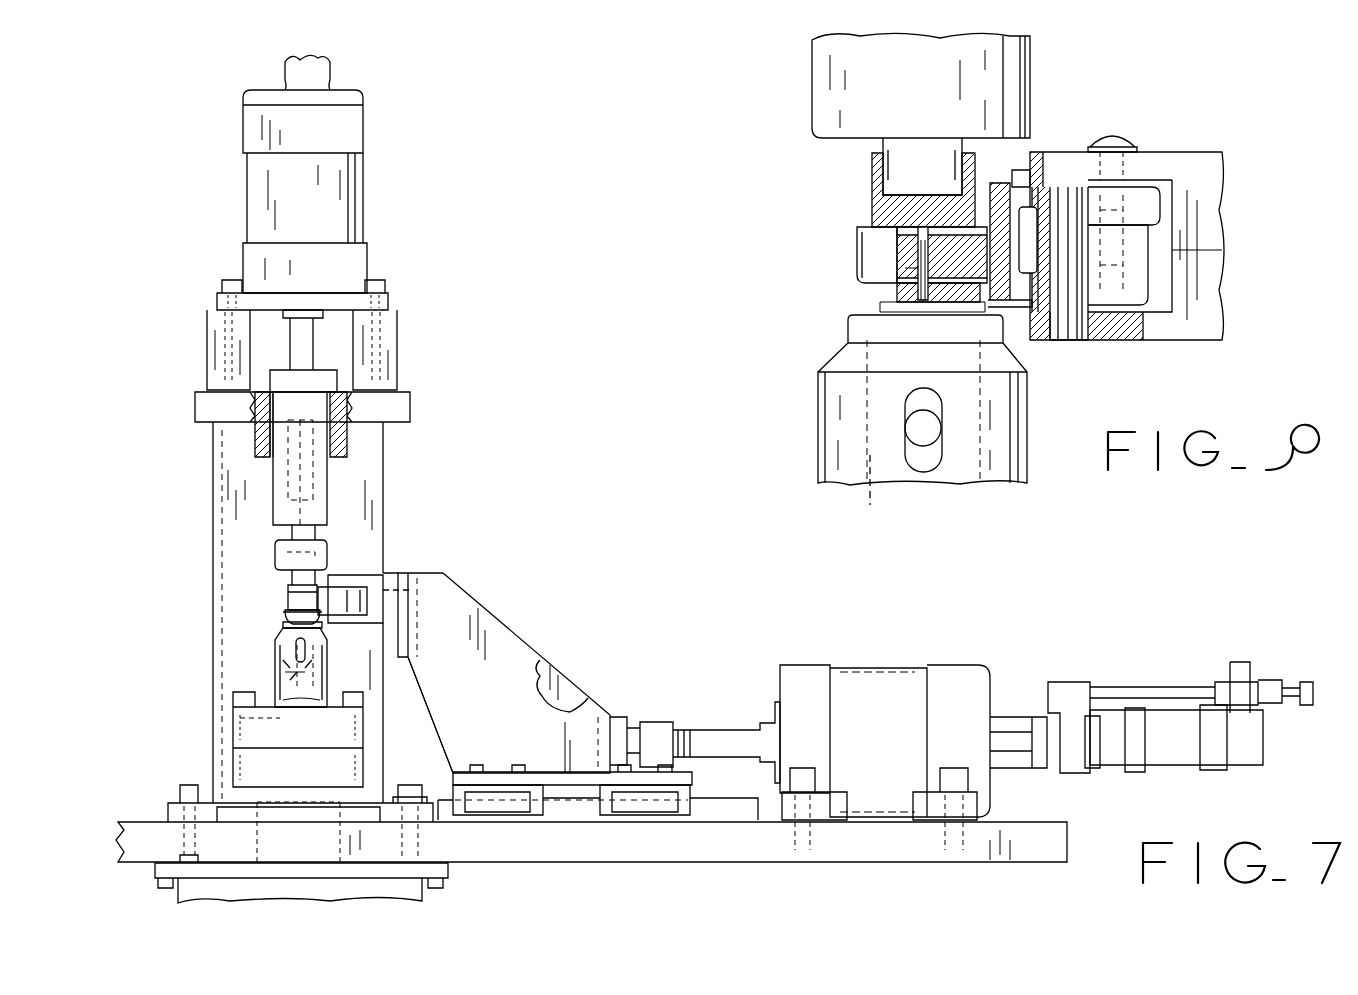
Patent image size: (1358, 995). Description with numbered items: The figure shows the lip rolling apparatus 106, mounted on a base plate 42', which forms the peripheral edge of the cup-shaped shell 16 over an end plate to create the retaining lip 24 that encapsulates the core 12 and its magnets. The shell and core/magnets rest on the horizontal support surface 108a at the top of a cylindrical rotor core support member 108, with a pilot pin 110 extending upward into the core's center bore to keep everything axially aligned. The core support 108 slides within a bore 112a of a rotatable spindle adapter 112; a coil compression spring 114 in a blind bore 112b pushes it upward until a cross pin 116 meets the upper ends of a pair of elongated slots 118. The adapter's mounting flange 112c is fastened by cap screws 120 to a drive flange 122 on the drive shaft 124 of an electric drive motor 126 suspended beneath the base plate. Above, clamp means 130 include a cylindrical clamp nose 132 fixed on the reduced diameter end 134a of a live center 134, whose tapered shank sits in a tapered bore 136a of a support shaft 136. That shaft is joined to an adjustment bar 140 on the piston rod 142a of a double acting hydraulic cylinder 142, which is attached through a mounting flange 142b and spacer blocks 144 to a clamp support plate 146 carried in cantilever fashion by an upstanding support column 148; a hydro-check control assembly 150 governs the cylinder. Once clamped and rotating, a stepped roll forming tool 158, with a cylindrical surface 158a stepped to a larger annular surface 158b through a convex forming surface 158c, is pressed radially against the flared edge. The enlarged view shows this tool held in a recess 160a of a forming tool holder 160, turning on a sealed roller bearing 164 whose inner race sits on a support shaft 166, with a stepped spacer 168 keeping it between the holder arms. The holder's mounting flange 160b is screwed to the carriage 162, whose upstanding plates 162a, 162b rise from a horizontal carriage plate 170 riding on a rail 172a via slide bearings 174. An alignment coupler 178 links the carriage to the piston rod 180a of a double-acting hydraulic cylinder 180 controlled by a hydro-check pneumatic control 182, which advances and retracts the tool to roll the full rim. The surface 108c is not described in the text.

In FIG. 9, the core 12 is at (910, 250).
In FIG. 7, the shell 16 is at (290, 605).
In FIG. 9, the shell 16 is at (890, 245).
In FIG. 9, the retaining lip 24 is at (860, 235).
In FIG. 7, the base plate 42' is at (591, 862).
In FIG. 7, the lip rolling apparatus 106 is at (415, 130).
In FIG. 7, the rotor core support member 108 is at (285, 626).
In FIG. 9, the rotor core support member 108 is at (915, 285).
In FIG. 7, the support surface 108a is at (290, 615).
In FIG. 9, the die passage 108c is at (905, 270).
In FIG. 9, the pilot pin 110 is at (920, 300).
In FIG. 7, the spindle adapter 112 is at (340, 668).
In FIG. 9, the spindle adapter 112 is at (822, 410).
In FIG. 7, the bore 112a is at (280, 640).
In FIG. 9, the bore 112a is at (875, 495).
In FIG. 7, the blind bore 112b is at (255, 725).
In FIG. 7, the mounting flange 112c is at (255, 733).
In FIG. 7, the coil compression spring 114 is at (275, 675).
In FIG. 7, the cross pin 116 is at (300, 655).
In FIG. 9, the cross pin 116 is at (930, 430).
In FIG. 9, the elongated slots 118 is at (935, 410).
In FIG. 7, the cap screws 120 is at (385, 738).
In FIG. 7, the drive flange 122 is at (245, 768).
In FIG. 7, the drive shaft 124 is at (265, 795).
In FIG. 7, the drive motor 126 is at (185, 898).
In FIG. 7, the clamp means 130 is at (355, 492).
In FIG. 7, the clamp nose 132 is at (290, 590).
In FIG. 9, the clamp nose 132 is at (870, 205).
In FIG. 7, the live center 134 is at (285, 490).
In FIG. 9, the live center 134 is at (822, 75).
In FIG. 7, the reduced diameter end 134a is at (280, 570).
In FIG. 9, the reduced diameter end 134a is at (895, 152).
In FIG. 7, the support shaft 136 is at (285, 425).
In FIG. 7, the tapered bore 136a is at (280, 470).
In FIG. 7, the adjustment bar 140 is at (330, 378).
In FIG. 7, the double acting hydraulic cylinder 142 is at (340, 195).
In FIG. 7, the piston rod 142a is at (290, 335).
In FIG. 7, the mounting flange 142b is at (385, 300).
In FIG. 7, the spacer blocks 144 is at (215, 355).
In FIG. 7, the clamp support plate 146 is at (400, 405).
In FIG. 7, the support column 148 is at (385, 670).
In FIG. 7, the hydro-check control assembly 150 is at (333, 76).
In FIG. 7, the roll forming tool 158 is at (335, 595).
In FIG. 9, the roll forming tool 158 is at (1140, 270).
In FIG. 9, the cylindrical surface 158a is at (1155, 285).
In FIG. 9, the upper larger diameter annular surface 158b is at (1160, 215).
In FIG. 9, the annular convex forming surface 158c is at (1155, 240).
In FIG. 7, the forming tool holder 160 is at (385, 600).
In FIG. 9, the forming tool holder 160 is at (1215, 160).
In FIG. 9, the recess 160a is at (1165, 270).
In FIG. 7, the mounting flange 160b is at (420, 573).
In FIG. 7, the carriage 162 is at (513, 626).
In FIG. 7, the carriage plate 162a is at (530, 655).
In FIG. 7, the carriage plate 162b is at (565, 685).
In FIG. 9, the sealed roller bearing 164 is at (1017, 165).
In FIG. 9, the support shaft 166 is at (1080, 320).
In FIG. 7, the stepped spacer 168 is at (417, 593).
In FIG. 9, the stepped spacer 168 is at (1020, 320).
In FIG. 7, the carriage plate 170 is at (585, 785).
In FIG. 7, the rail 172a is at (565, 810).
In FIG. 7, the slide bearings 174 is at (500, 805).
In FIG. 7, the alignment coupler 178 is at (655, 735).
In FIG. 7, the double-acting hydraulic cylinder 180 is at (890, 665).
In FIG. 7, the piston rod 180a is at (725, 730).
In FIG. 7, the hydro-check pneumatic control 182 is at (1112, 668).